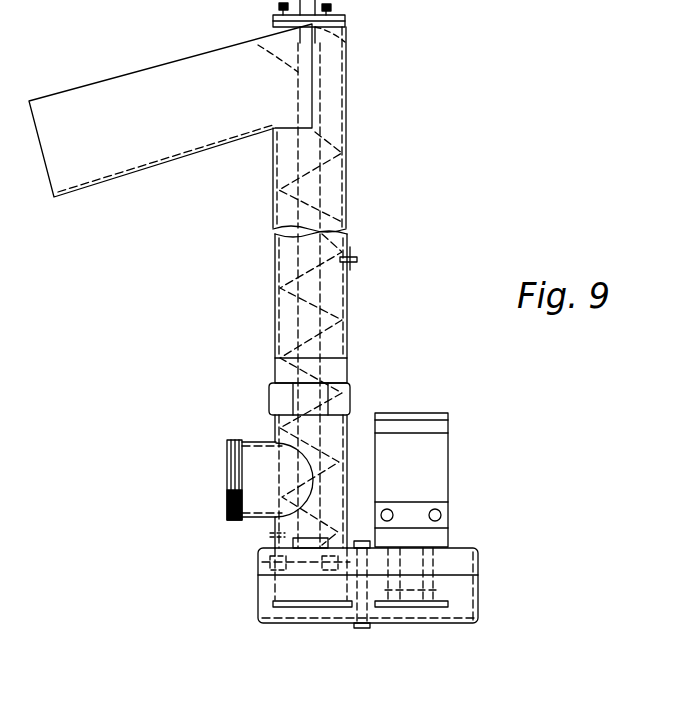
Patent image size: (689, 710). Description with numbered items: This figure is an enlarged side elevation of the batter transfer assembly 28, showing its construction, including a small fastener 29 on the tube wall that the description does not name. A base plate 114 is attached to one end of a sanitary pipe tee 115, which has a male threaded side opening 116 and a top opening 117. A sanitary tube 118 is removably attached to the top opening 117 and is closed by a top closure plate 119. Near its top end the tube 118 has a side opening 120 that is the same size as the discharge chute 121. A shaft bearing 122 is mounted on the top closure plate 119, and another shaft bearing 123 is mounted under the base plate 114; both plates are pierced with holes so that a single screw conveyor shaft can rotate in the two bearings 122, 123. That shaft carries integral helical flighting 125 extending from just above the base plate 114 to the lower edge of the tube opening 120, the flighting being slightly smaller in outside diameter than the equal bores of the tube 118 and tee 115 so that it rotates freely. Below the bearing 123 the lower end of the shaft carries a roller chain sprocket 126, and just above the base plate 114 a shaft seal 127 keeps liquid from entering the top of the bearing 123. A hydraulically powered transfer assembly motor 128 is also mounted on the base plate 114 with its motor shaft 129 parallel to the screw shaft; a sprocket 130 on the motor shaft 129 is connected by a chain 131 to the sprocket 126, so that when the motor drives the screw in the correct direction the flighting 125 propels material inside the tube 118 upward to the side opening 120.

The batter transfer assembly 28 is at (352, 165).
The set screw 29 is at (357, 260).
The base plate 114 is at (477, 545).
The sanitary pipe tee 115 is at (263, 440).
The male threaded side opening 116 is at (227, 490).
The top opening 117 is at (322, 383).
The sanitary tube 118 is at (347, 300).
The top closure plate 119 is at (348, 42).
The side opening 120 is at (258, 45).
The discharge chute 121 is at (186, 55).
The shaft bearing 122 is at (342, 22).
The shaft bearing 123 is at (295, 572).
The helical flighting 125 is at (347, 208).
The roller chain sprocket 126 is at (293, 608).
The shaft seal 127 is at (268, 534).
The transfer assembly motor 128 is at (442, 468).
The motor shaft 129 is at (447, 562).
The sprocket 130 is at (442, 610).
The chain 131 is at (373, 610).